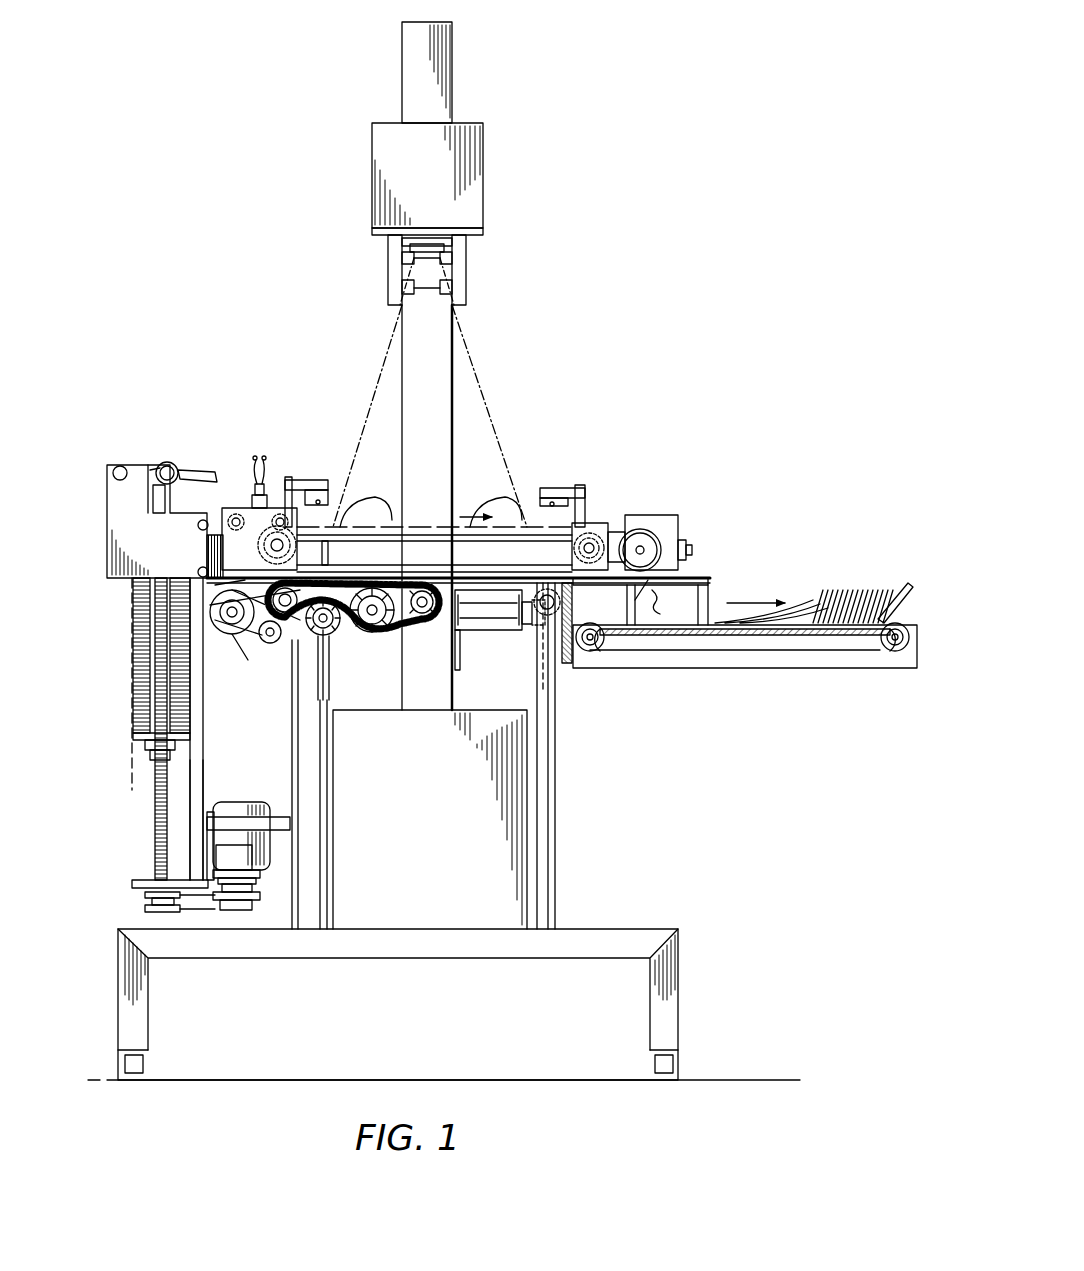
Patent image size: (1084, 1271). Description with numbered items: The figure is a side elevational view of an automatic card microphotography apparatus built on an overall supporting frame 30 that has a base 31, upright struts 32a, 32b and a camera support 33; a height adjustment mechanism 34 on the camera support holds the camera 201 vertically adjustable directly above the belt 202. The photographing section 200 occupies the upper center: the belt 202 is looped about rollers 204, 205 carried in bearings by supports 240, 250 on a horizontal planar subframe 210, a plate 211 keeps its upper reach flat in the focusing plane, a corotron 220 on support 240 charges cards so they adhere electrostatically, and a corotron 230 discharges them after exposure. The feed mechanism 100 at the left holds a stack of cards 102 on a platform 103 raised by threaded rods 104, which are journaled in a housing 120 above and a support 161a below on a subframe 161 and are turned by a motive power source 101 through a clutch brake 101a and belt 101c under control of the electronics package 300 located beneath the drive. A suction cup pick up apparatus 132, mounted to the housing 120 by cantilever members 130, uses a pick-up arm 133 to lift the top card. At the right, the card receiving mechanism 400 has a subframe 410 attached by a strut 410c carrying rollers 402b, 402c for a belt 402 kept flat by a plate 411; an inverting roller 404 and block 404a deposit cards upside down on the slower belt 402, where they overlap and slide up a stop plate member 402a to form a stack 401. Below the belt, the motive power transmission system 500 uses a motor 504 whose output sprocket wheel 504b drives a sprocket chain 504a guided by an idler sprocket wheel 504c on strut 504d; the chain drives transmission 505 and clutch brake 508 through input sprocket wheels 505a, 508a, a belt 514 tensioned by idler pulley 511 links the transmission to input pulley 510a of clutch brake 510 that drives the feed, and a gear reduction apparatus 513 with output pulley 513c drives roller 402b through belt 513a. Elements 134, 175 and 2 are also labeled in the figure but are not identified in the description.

The feed mechanism 100 is at (115, 460).
The motive power source 101 is at (235, 802).
The clutch brake 101a is at (245, 852).
The belt 101c is at (190, 908).
The stack of cards 102 is at (132, 622).
The platform 103 is at (140, 738).
The threaded rods 104 is at (155, 830).
The housing 120 is at (125, 585).
The cantilever members 130 is at (157, 467).
The suction cup pick up apparatus 132 is at (178, 455).
The suction cup pick-up arm 133 is at (173, 495).
The lever 134 is at (205, 472).
The subframe 161 is at (188, 770).
The support 161a is at (140, 880).
The sensor 175 is at (255, 495).
The photographing section 200 is at (385, 302).
The camera 201 is at (483, 162).
The belt 202 is at (415, 527).
The roller 204 is at (270, 548).
The roller 205 is at (600, 522).
The horizontal planar subframe 210 is at (480, 590).
The plate 211 is at (448, 540).
The corotron 220 is at (316, 498).
The corotron 230 is at (556, 478).
The support 240 is at (279, 508).
The support 250 is at (590, 523).
The electronics package 300 is at (402, 769).
The frame 30 is at (455, 358).
The base 31 is at (585, 940).
The upright strut 32a is at (548, 770).
The upright strut 32b is at (312, 815).
The camera support 33 is at (402, 357).
The height adjustment mechanism 34 is at (466, 272).
The card receiving mechanism 400 is at (836, 556).
The stack 401 is at (855, 598).
The belt 402 is at (755, 656).
The stop plate member 402a is at (905, 605).
The roller 402b is at (595, 651).
The roller 402c is at (897, 651).
The roller 404 is at (650, 515).
The block 404a is at (685, 540).
The subframe 410 is at (675, 668).
The strut 410c is at (710, 590).
The plate 411 is at (822, 640).
The motive power transmission system 500 is at (392, 677).
The motor 504 is at (470, 640).
The sprocket chain 504a is at (458, 575).
The motor output sprocket wheel 504b is at (418, 622).
The idler sprocket wheel 504c is at (305, 590).
The strut 504d is at (245, 580).
The transmission 505 is at (320, 640).
The input sprocket wheel 505a is at (330, 650).
The clutch brake 508 is at (398, 615).
The input sprocket wheel 508a is at (365, 632).
The clutch brake 510 is at (212, 615).
The input pulley 510a is at (228, 630).
The idler pulley 511 is at (265, 640).
The gear reduction apparatus 513 is at (540, 683).
The belt 513a is at (560, 615).
The output pulley 513c is at (460, 623).
The belt 514 is at (272, 648).
The sheet 2 is at (649, 597).